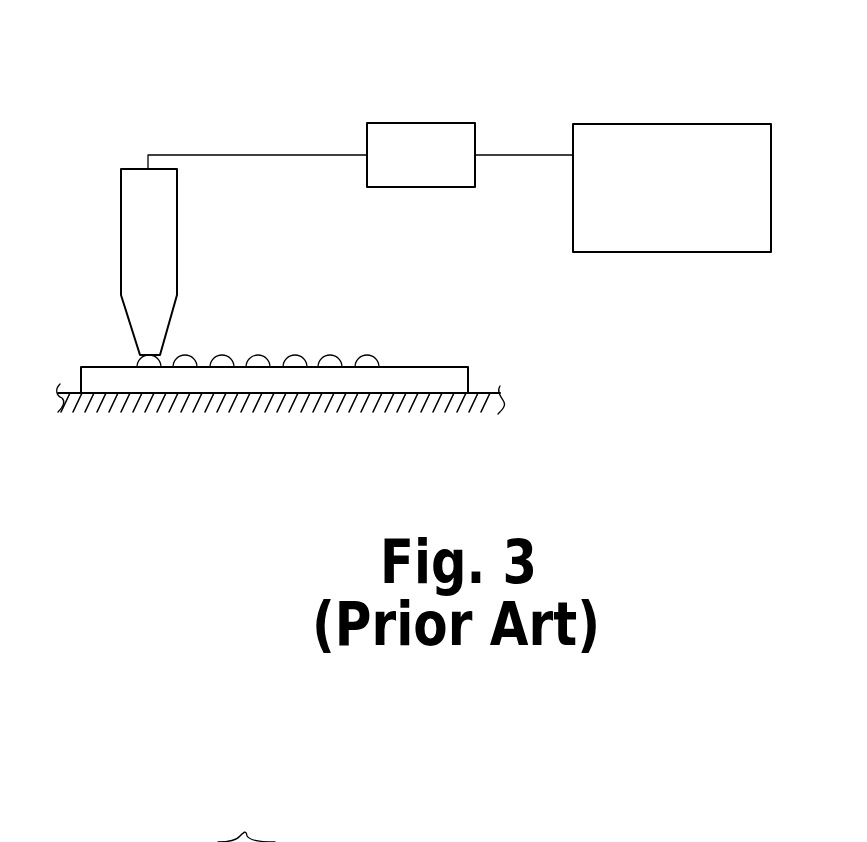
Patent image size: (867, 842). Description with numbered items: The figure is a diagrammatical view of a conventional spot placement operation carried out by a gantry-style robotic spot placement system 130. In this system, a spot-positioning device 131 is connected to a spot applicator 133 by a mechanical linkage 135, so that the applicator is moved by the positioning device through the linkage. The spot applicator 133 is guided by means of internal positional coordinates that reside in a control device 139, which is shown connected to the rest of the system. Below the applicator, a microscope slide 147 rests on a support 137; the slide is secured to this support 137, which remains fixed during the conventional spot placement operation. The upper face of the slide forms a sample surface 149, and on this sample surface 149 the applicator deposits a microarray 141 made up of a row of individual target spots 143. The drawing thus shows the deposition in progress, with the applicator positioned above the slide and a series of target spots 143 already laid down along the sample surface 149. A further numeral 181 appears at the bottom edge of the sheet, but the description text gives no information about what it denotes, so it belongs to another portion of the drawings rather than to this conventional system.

The gantry-style robotic spot placement system 130 is at (523, 49).
The spot-positioning device 131 is at (442, 123).
The spot applicator 133 is at (178, 233).
The mechanical linkage 135 is at (270, 155).
The support 137 is at (482, 396).
The control device 139 is at (718, 124).
The microarray 141 is at (258, 295).
The target spots 143 is at (301, 360).
The microscope slide 147 is at (470, 391).
The sample surface 149 is at (462, 366).
The partial numeral from adjacent figure 181 is at (270, 822).